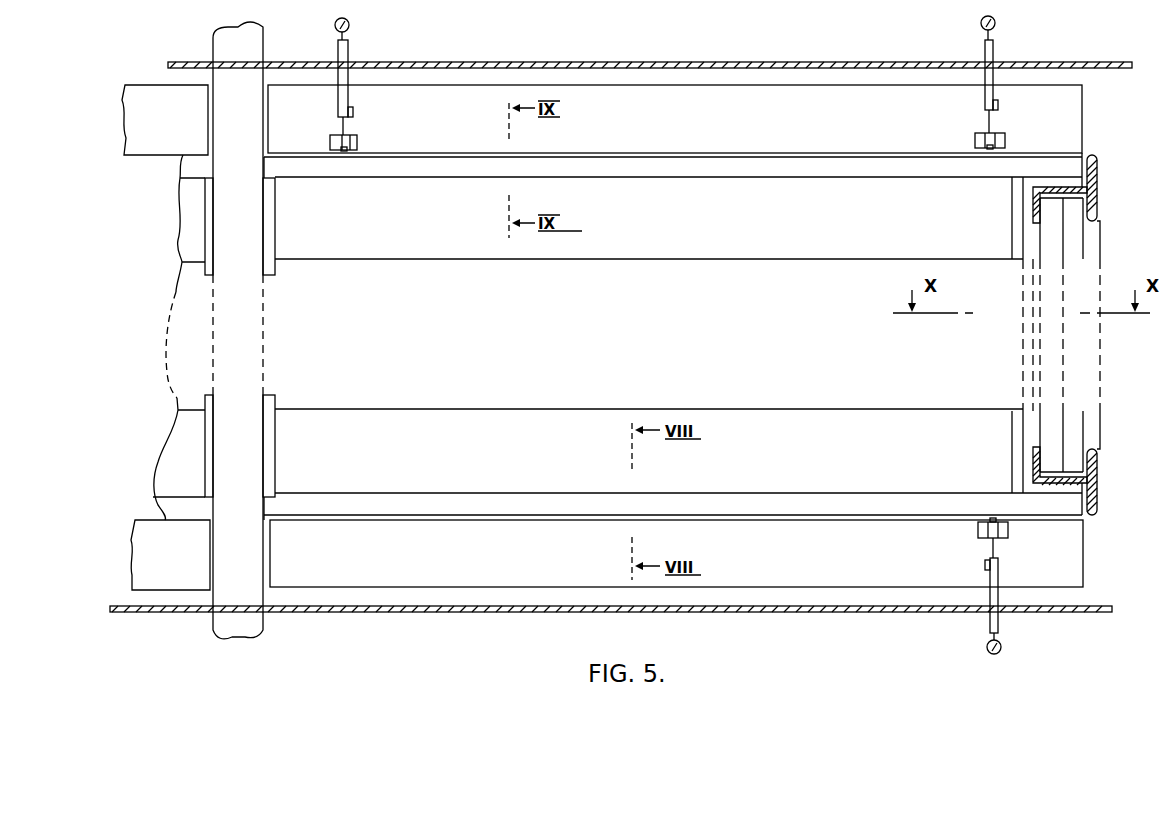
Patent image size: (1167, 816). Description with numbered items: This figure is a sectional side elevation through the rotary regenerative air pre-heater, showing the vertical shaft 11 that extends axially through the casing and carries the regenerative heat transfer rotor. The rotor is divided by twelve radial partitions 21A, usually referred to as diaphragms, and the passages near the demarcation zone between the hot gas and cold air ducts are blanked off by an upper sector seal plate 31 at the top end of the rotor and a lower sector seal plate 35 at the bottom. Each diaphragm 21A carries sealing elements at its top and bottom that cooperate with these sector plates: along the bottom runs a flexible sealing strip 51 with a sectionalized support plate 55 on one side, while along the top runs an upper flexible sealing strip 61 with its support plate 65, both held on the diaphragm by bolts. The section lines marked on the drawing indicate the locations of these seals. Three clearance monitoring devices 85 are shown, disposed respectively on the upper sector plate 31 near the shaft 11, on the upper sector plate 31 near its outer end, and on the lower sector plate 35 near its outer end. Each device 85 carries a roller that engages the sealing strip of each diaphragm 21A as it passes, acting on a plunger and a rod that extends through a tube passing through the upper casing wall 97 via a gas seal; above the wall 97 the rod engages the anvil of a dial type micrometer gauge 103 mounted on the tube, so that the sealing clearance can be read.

The vertical shaft 11 is at (265, 331).
The radial partition 21A is at (518, 322).
The upper sector seal plate 31 is at (628, 127).
The lower sector seal plate 35 is at (481, 564).
The flexible sealing strip 51 is at (535, 497).
The sectionalized support plate 55 is at (500, 412).
The upper flexible sealing strip 61 is at (712, 172).
The support plate 65 is at (664, 253).
The clearance monitoring device 85 is at (355, 138).
The upper casing wall 97 is at (400, 63).
The dial type micrometer gauge 103 is at (350, 23).